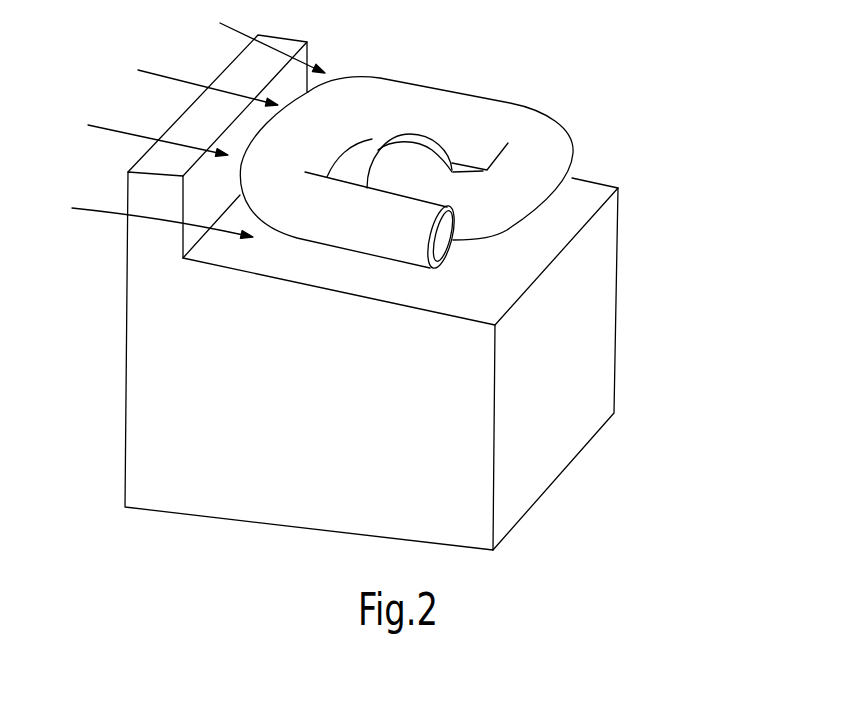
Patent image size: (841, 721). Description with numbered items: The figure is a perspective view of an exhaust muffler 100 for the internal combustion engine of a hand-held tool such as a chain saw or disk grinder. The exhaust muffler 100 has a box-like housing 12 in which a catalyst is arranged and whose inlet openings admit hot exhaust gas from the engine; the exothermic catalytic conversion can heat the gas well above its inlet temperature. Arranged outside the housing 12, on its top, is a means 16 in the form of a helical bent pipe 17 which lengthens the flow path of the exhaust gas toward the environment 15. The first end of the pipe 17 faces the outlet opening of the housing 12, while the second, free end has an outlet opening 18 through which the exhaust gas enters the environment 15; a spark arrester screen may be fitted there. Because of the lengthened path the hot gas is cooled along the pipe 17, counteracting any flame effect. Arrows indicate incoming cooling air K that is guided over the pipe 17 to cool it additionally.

The housing 12 is at (367, 449).
The environment 15 is at (698, 357).
The means 16 is at (587, 108).
The helical bent pipe 17 is at (467, 117).
The outlet opening 18 is at (438, 241).
The exhaust muffler 100 is at (599, 487).
The cooling air K is at (83, 102).